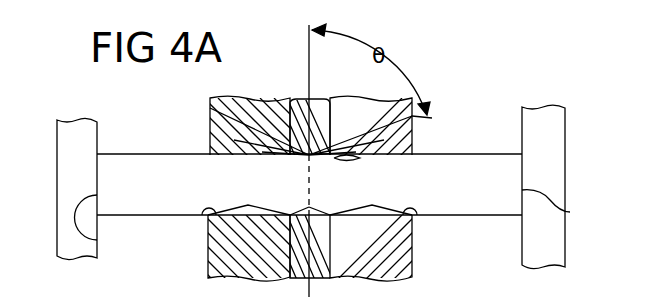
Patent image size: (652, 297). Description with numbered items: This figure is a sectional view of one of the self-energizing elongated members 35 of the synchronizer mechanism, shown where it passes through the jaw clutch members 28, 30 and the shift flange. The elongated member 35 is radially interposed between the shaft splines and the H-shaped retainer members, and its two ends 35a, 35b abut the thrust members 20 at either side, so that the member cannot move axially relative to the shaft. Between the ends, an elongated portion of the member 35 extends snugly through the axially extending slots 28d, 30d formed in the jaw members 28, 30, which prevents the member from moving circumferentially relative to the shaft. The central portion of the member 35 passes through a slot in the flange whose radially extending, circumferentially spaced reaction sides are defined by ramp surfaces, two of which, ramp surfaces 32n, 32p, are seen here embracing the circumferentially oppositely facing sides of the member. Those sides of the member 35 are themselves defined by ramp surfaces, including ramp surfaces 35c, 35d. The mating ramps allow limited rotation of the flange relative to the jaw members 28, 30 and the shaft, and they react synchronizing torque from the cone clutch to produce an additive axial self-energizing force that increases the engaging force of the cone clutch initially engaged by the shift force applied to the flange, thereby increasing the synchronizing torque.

The thrust members 20 is at (97, 124).
The jaw clutch member 28 is at (251, 251).
The jaw clutch member 30 is at (411, 251).
The axially extending slot 28d is at (205, 218).
The axially extending slot 30d is at (414, 218).
The ramp surface 32n is at (297, 215).
The ramp surface 32p is at (321, 215).
The elongated member 35 is at (455, 155).
The end 35a is at (97, 237).
The end 35b is at (570, 212).
The ramp surface 35c is at (210, 104).
The ramp surface 35d is at (350, 158).